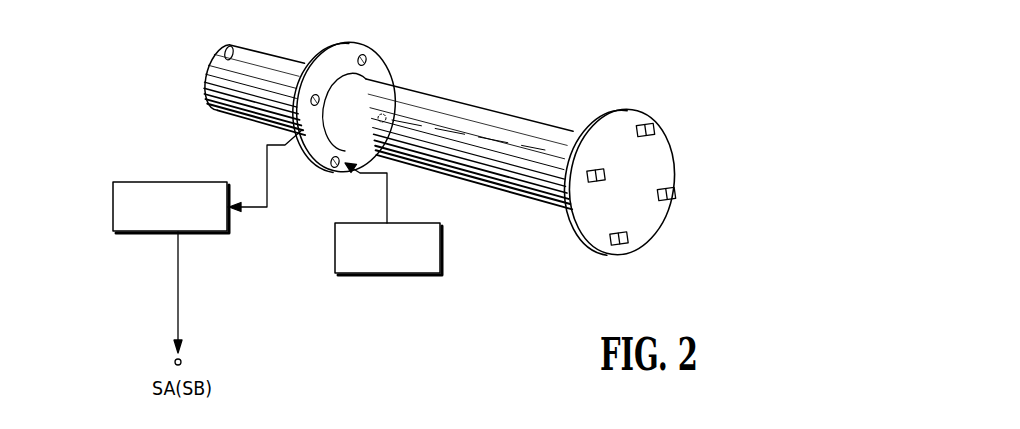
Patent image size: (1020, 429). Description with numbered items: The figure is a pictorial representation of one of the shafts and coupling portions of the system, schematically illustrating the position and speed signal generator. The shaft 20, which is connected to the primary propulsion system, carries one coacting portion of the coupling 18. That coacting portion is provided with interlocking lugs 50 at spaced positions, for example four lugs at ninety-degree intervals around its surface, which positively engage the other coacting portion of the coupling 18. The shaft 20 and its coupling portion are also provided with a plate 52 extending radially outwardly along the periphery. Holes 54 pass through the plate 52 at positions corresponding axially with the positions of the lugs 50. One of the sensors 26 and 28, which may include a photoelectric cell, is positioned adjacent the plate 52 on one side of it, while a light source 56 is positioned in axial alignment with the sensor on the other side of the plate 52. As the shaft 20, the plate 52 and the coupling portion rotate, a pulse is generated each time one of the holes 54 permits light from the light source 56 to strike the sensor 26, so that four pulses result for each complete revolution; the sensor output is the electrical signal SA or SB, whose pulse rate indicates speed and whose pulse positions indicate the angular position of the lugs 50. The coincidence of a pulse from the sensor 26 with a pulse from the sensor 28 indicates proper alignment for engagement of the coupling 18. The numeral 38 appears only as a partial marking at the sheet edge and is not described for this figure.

The coupling 18 is at (651, 112).
The drive shaft 20 is at (462, 103).
The sensor 26 is at (173, 247).
The sensor 28 is at (114, 184).
The reference (partial) 38 is at (752, 422).
The interlocking lugs 50 is at (676, 193).
The plate 52 is at (350, 41).
The holes 54 is at (367, 56).
The light source 56 is at (444, 241).